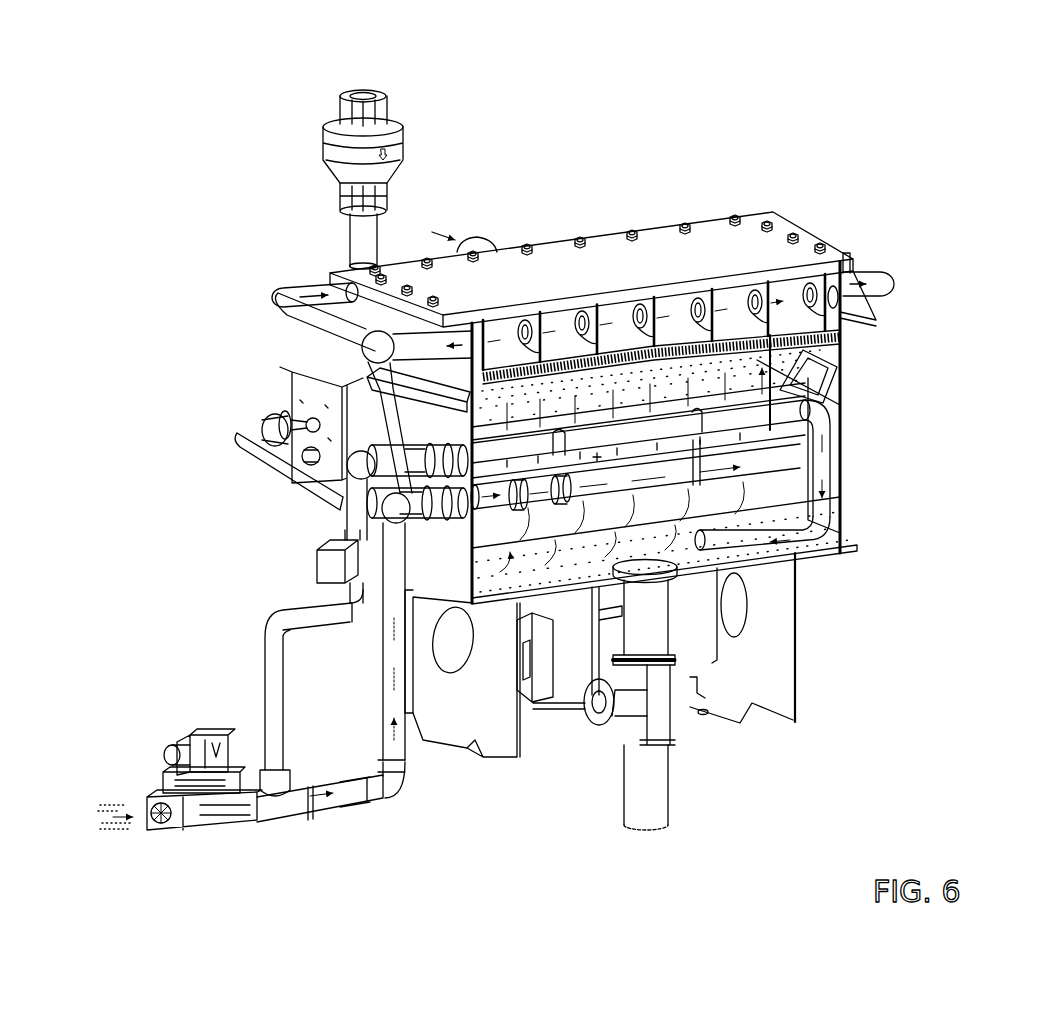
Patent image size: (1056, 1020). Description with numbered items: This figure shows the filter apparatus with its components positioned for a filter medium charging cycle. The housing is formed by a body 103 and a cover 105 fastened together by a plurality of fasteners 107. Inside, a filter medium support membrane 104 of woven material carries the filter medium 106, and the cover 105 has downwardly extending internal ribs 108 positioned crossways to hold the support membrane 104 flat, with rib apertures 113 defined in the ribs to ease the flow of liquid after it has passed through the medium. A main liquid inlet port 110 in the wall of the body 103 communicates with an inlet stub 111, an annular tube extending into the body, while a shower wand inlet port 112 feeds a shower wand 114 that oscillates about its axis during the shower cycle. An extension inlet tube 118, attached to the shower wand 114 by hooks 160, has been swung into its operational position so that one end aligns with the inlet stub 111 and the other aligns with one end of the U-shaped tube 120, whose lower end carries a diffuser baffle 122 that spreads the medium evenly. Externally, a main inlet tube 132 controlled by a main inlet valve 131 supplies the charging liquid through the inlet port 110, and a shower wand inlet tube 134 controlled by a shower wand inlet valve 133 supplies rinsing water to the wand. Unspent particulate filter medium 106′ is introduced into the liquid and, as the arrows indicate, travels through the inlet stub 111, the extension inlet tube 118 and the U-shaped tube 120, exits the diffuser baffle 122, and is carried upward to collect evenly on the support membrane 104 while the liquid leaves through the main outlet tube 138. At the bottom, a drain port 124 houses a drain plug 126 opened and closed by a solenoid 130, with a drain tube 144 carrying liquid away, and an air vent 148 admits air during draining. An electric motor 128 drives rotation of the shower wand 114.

The body 103 is at (833, 495).
The filter medium support membrane 104 is at (837, 340).
The cover 105 is at (765, 258).
The filter medium 106 is at (803, 350).
The unspent particulate filter medium 106′ is at (425, 762).
The fasteners 107 is at (680, 222).
The internal ribs 108 is at (741, 298).
The main liquid inlet port 110 is at (457, 520).
The inlet stub 111 is at (496, 498).
The shower wand inlet port 112 is at (457, 465).
The rib apertures 113 is at (577, 320).
The shower wand 114 is at (637, 436).
The extension inlet tube 118 is at (663, 475).
The U-shaped tube 120 is at (837, 470).
The diffuser baffle 122 is at (837, 557).
The drain port 124 is at (594, 598).
The drain plug 126 is at (660, 575).
The electric motor 128 is at (292, 372).
The solenoid 130 is at (538, 687).
The main inlet valve 131 is at (182, 742).
The main inlet tube 132 is at (325, 807).
The shower wand inlet valve 133 is at (318, 563).
The shower wand inlet tube 134 is at (268, 690).
The main outlet tube 138 is at (265, 290).
The drain tube 144 is at (650, 810).
The air vent 148 is at (343, 93).
The hooks 160 is at (558, 443).